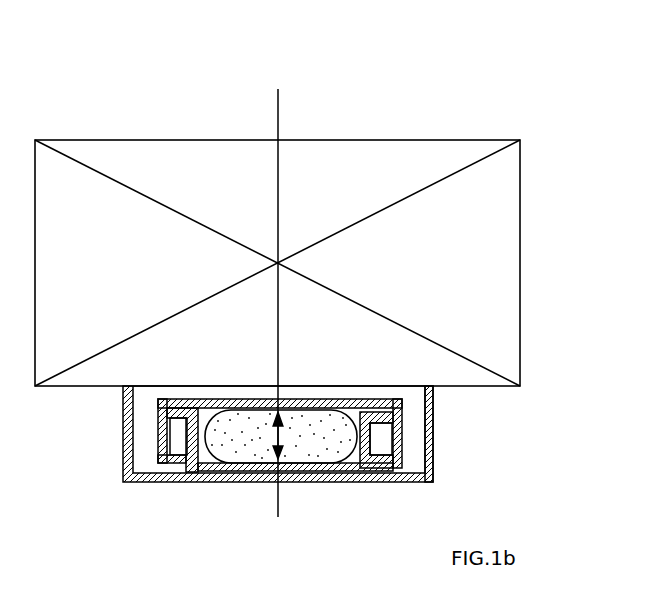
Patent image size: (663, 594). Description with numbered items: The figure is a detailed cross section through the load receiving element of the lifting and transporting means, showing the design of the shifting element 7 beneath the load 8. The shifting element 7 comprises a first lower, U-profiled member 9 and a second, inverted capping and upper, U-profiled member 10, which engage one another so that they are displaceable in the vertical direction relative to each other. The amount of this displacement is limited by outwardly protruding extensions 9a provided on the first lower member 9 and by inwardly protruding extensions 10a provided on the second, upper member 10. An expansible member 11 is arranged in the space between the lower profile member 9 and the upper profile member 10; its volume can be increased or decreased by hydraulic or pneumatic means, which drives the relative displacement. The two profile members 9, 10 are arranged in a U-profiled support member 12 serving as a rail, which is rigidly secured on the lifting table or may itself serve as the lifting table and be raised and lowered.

The shifting element 7 is at (110, 450).
The loudspeaker / transducer body 8 is at (497, 290).
The first lower U-profiled member 9 is at (194, 471).
The outwardly protruding extensions 9a is at (383, 420).
The second upper U-profiled member 10 is at (342, 408).
The inwardly protruding extensions 10a is at (385, 462).
The expansible member 11 is at (252, 445).
The U-profiled support member 12 is at (432, 457).